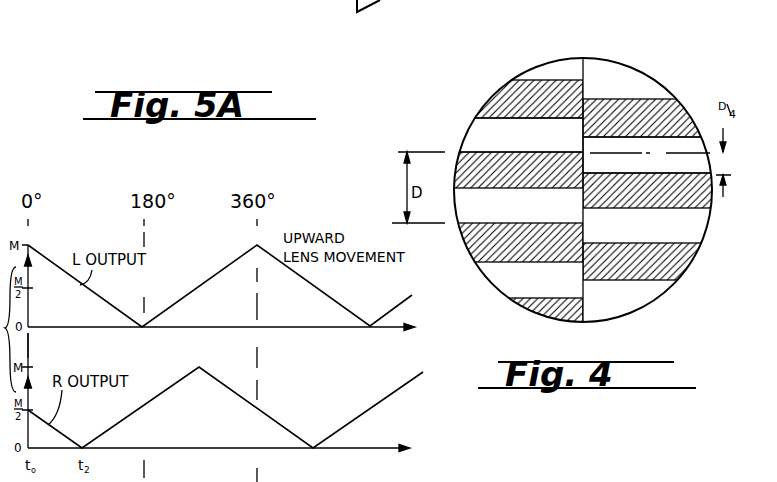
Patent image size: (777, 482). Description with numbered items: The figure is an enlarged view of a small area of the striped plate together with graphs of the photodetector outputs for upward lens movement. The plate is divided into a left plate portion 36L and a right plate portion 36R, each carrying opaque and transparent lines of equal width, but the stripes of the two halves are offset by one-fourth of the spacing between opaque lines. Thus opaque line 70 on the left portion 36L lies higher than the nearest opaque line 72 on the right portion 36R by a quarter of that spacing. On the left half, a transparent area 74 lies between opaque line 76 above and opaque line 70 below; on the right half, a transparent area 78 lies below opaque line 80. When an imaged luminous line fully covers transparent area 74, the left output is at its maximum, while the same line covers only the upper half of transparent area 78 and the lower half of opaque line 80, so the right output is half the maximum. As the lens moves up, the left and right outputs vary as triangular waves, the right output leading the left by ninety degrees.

The left plate portion 36L is at (495, 175).
The right plate portion 36R is at (661, 151).
The opaque line 70 is at (462, 155).
The opaque line 72 is at (703, 204).
The transparent area 74 is at (475, 128).
The opaque line 76 is at (503, 92).
The transparent area 78 is at (690, 145).
The opaque line 80 is at (667, 104).